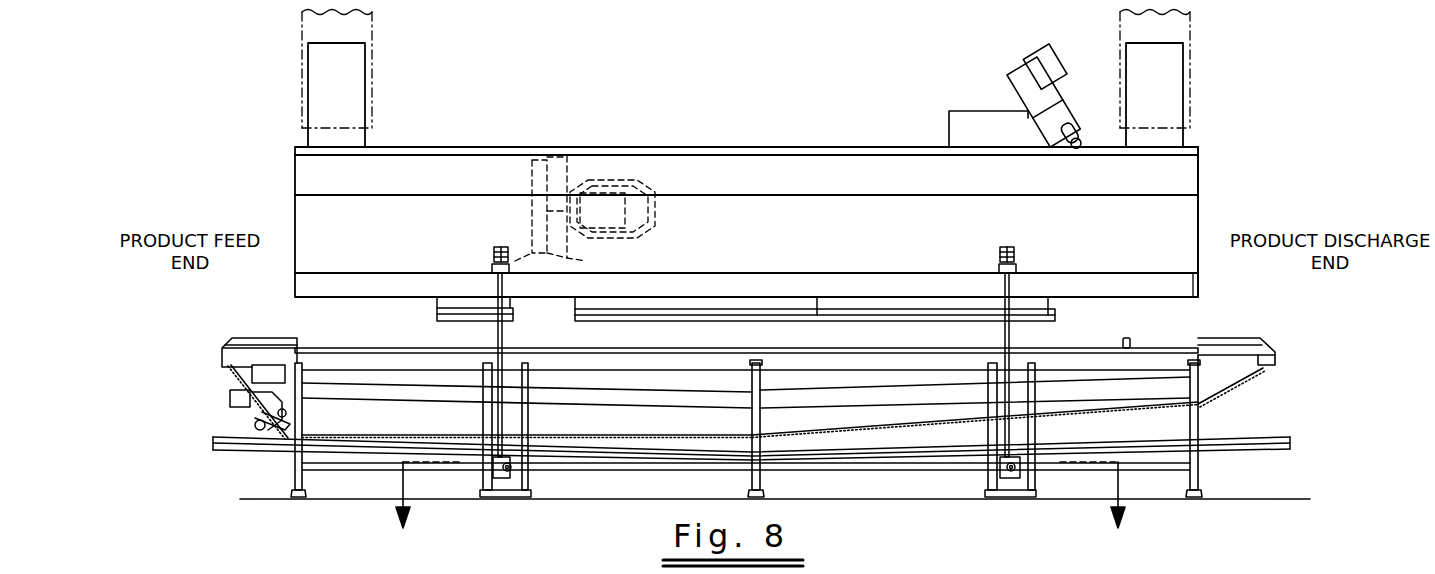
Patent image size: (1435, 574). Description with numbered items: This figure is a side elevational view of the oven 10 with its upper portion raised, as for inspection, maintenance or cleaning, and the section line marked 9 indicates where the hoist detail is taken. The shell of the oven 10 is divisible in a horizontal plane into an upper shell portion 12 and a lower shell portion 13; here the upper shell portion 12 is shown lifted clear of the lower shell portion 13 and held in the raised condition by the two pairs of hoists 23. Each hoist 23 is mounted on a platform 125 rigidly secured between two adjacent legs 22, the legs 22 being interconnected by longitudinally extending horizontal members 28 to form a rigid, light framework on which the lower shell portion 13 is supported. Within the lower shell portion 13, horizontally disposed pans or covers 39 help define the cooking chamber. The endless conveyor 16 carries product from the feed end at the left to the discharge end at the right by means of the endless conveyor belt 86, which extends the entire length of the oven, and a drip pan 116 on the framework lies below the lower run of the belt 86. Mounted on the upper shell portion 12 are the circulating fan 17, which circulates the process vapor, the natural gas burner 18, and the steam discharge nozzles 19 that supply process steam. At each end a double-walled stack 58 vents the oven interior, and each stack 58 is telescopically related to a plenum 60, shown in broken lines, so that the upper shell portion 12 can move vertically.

The oven 10 is at (258, 150).
The upper shell portion 12 is at (1206, 226).
The lower shell portion 13 is at (1176, 341).
The endless conveyor 16 is at (229, 397).
The circulating fan 17 is at (614, 190).
The natural gas burner 18 is at (1020, 73).
The steam discharge nozzles 19 is at (1131, 343).
The legs 22 is at (528, 383).
The hoists 23 is at (492, 410).
The longitudinally extending horizontal members 28 is at (375, 472).
The pans or covers 39 is at (470, 320).
The double-walled stack 58 is at (351, 96).
The plenums 60 is at (302, 71).
The endless conveyor belt 86 is at (432, 434).
The drip pan 116 is at (231, 452).
The platform 125 is at (510, 492).
The section line 9 is at (760, 510).